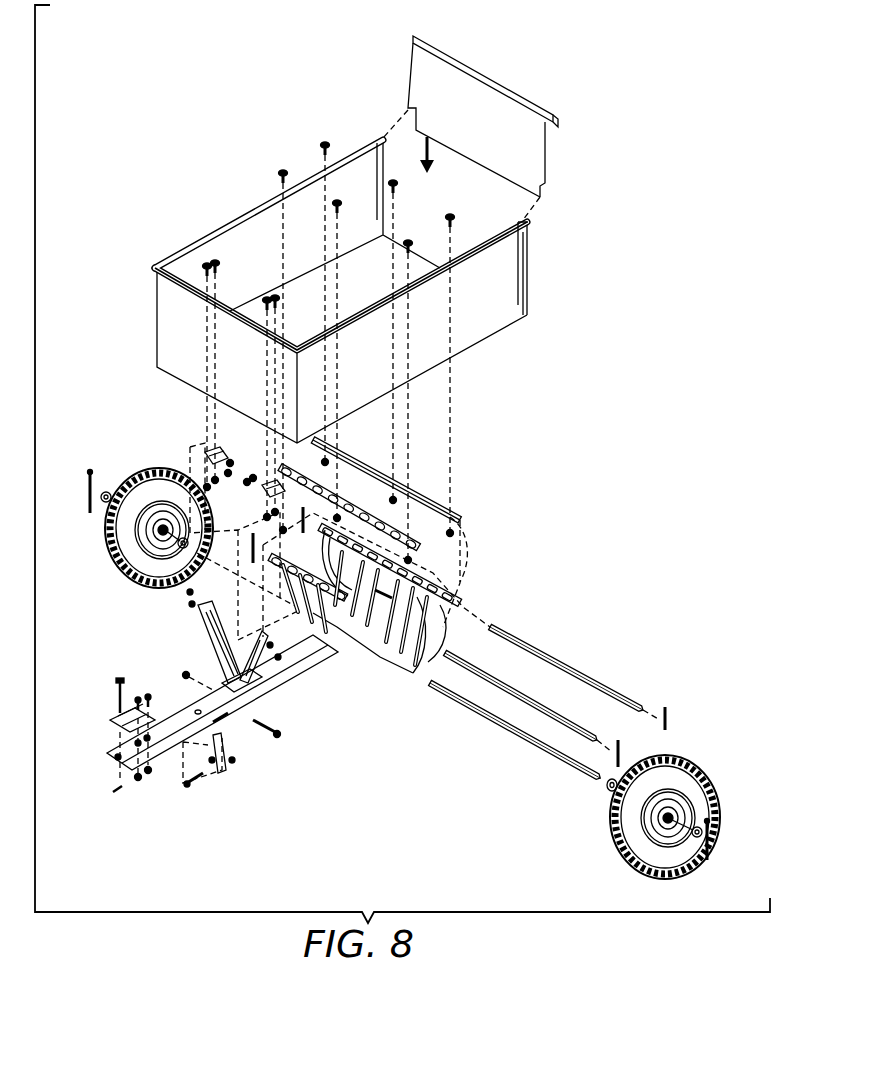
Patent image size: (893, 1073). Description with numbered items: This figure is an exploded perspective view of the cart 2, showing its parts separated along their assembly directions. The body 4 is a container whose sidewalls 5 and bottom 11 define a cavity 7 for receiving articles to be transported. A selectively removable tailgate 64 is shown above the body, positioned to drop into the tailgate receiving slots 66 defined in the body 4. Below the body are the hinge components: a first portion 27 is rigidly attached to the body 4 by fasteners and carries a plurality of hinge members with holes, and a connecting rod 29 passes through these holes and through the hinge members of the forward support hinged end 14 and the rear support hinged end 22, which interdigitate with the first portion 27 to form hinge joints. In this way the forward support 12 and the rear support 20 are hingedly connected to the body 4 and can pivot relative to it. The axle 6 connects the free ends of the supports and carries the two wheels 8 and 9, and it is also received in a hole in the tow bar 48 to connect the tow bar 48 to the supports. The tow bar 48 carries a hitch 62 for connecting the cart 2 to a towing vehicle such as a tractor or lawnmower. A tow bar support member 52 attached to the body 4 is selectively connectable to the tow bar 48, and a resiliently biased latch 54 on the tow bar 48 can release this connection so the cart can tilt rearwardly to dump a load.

The cart 2 is at (84, 180).
The body 4 is at (157, 267).
The sidewalls 5 is at (170, 310).
The cavity 7 is at (303, 222).
The bottom 11 is at (370, 267).
The tailgate 64 is at (532, 152).
The tailgate receiving slots 66 is at (530, 280).
The first portion 27 is at (430, 507).
The rear support hinged end 22 is at (437, 567).
The rear support 20 is at (437, 600).
The forward support 12 is at (385, 650).
The forward support hinged end 14 is at (358, 613).
The connecting rod 29 is at (580, 676).
The axle 6 is at (563, 767).
The wheel 8 is at (713, 788).
The wheel 9 is at (107, 555).
The tow bar support member 52 is at (205, 637).
The hitch 62 is at (117, 723).
The tow bar 48 is at (153, 750).
The latch 54 is at (227, 743).